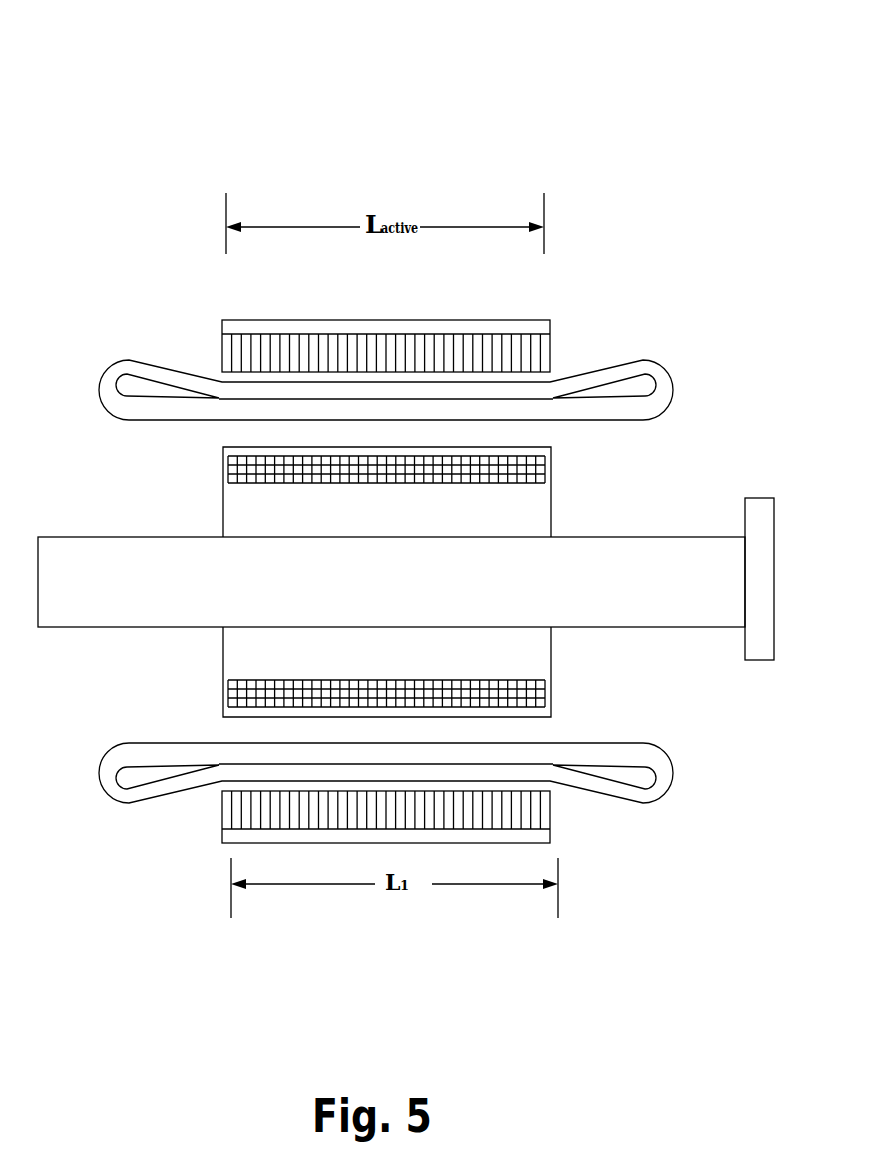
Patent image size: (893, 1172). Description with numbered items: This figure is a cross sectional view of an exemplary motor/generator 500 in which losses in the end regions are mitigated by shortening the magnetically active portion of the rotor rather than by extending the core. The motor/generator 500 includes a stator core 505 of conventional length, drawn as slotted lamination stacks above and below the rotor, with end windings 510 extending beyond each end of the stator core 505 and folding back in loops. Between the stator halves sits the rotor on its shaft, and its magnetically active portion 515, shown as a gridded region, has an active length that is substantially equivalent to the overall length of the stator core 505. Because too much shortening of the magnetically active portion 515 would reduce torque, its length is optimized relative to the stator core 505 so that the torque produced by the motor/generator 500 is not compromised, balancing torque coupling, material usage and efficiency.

The motor/generator 500 is at (662, 74).
The stator core 505 is at (392, 338).
The stator end windings 510 is at (665, 367).
The magnetically active portion of the rotor 515 is at (550, 467).